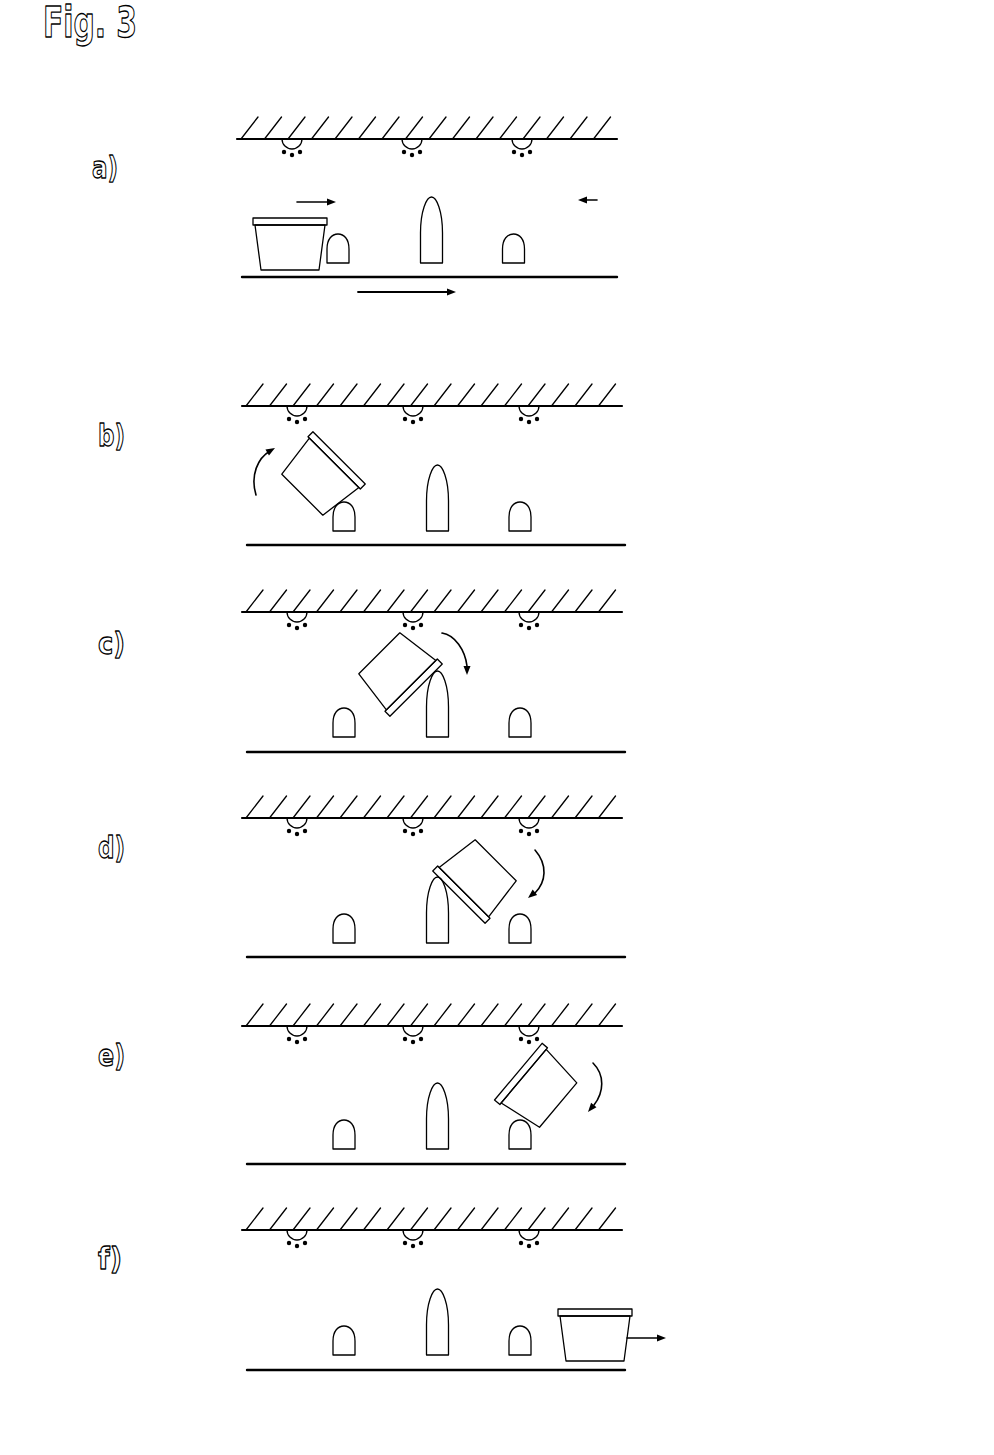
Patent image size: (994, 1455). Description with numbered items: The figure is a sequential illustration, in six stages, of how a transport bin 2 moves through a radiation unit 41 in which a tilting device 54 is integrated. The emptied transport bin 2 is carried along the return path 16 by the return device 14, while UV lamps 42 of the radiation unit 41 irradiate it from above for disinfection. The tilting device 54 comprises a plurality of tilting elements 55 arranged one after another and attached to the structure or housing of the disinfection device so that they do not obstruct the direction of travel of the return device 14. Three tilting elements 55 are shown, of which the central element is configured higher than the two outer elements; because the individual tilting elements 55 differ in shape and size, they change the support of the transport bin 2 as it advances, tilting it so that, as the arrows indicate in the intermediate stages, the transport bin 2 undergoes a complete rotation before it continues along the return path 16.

The transport bin 2 is at (270, 243).
The return device 14 is at (575, 277).
The return path 16 is at (398, 296).
The radiation unit 41 is at (257, 121).
The UV lamp 42 is at (292, 152).
The tilting device 54 is at (597, 200).
The tilting element 55 is at (342, 247).